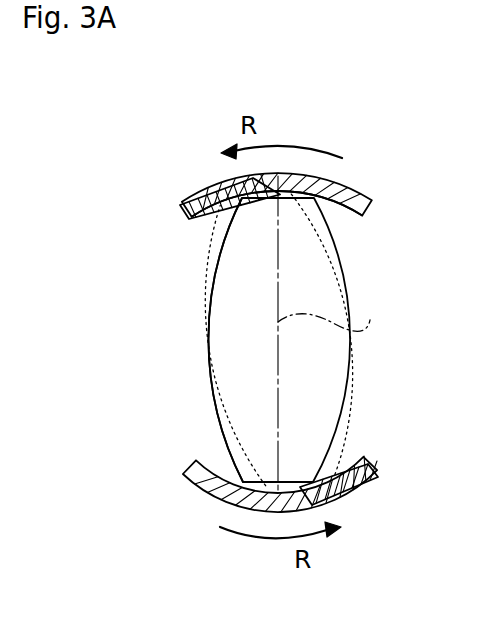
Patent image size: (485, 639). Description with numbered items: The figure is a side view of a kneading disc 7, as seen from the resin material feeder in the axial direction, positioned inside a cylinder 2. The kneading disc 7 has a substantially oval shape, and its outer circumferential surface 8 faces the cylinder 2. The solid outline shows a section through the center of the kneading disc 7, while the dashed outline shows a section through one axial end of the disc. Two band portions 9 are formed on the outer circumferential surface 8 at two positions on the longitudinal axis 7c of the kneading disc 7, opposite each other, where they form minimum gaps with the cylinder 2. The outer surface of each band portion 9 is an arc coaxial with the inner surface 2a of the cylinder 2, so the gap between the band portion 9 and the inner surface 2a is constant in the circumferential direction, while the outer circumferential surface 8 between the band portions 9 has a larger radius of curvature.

The cylinder 2 is at (368, 203).
The inner surface of cylinder 2a is at (365, 216).
The kneading disc 7 is at (190, 291).
The longitudinal axis of kneading disc 7c is at (340, 323).
The outer circumferential surface 8 is at (210, 322).
The band portion 9 is at (250, 178).